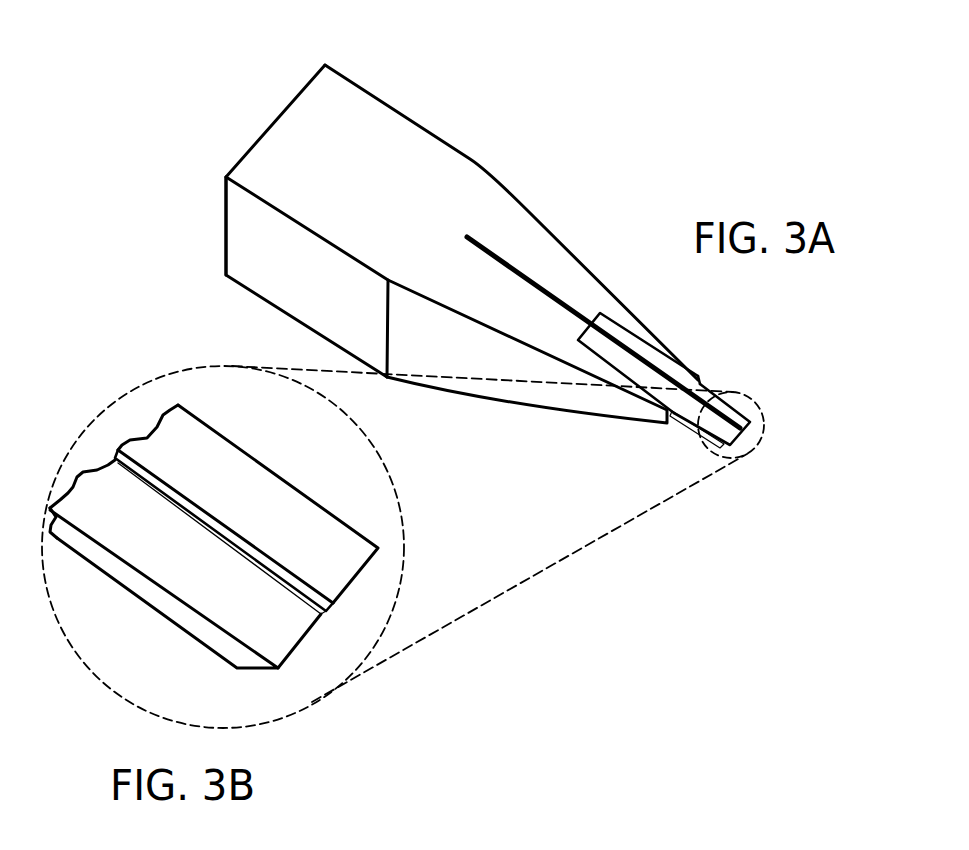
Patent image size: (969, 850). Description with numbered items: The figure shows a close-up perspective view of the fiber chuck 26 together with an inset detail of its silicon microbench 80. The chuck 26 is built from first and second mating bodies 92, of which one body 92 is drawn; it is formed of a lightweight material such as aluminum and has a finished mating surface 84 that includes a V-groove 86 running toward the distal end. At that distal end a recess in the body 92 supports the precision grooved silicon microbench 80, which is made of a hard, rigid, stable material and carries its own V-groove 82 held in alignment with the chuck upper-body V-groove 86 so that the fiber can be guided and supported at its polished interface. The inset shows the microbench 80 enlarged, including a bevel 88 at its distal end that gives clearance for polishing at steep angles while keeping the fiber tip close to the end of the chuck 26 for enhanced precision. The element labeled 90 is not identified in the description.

In FIG. 3A, the fiber chuck 26 is at (488, 82).
In FIG. 3A, the silicon microbench 80 is at (731, 397).
In FIG. 3B, the silicon microbench 80 is at (223, 458).
In FIG. 3A, the V-groove 82 is at (737, 430).
In FIG. 3B, the V-groove 82 is at (258, 553).
In FIG. 3A, the finished mating surface 84 is at (517, 223).
In FIG. 3A, the V-groove 86 is at (547, 290).
In FIG. 3B, the bevel 88 is at (259, 692).
In FIG. 3A, the sleeve 90 is at (658, 348).
In FIG. 3A, the mating body 92 is at (312, 293).